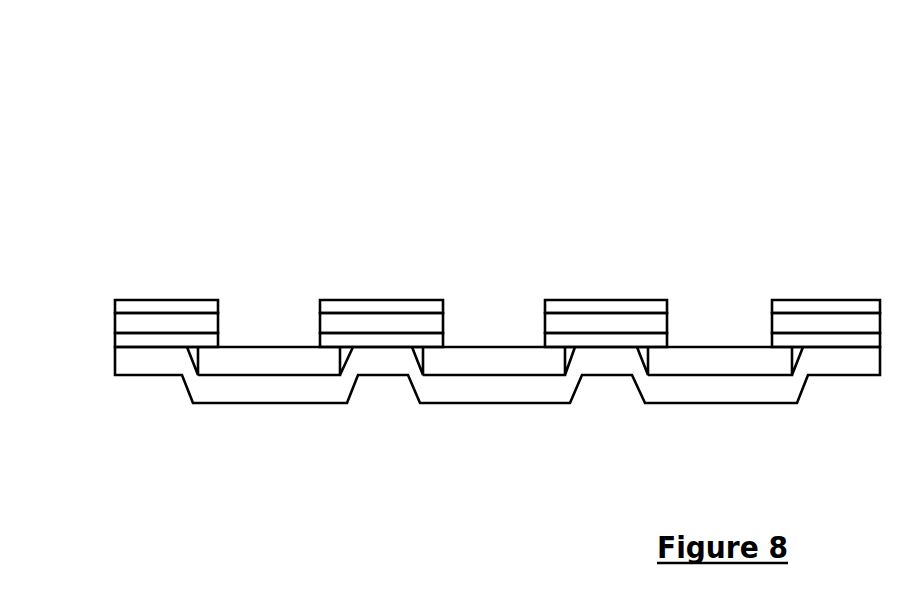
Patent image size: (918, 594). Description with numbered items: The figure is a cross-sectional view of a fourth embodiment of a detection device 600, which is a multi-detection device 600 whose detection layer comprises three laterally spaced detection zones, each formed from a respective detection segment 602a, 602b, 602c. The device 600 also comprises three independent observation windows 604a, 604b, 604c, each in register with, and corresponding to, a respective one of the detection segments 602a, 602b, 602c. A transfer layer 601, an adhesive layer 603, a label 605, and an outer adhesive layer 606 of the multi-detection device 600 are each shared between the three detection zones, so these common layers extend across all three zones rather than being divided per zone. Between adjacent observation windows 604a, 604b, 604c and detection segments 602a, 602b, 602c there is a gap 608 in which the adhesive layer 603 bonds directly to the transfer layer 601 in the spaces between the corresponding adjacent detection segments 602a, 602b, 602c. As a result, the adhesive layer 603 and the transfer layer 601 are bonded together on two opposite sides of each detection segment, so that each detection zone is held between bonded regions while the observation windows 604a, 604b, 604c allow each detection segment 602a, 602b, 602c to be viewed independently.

The detection device 600 is at (157, 110).
The transfer layer 601 is at (167, 365).
The detection segment 602a is at (283, 360).
The detection segment 602b is at (491, 362).
The detection segment 602c is at (721, 362).
The adhesive layer 603 is at (135, 340).
The observation window 604a is at (268, 276).
The observation window 604b is at (492, 274).
The observation window 604c is at (710, 277).
The label 605 is at (186, 329).
The outer adhesive layer 606 is at (199, 305).
The gap 608 is at (383, 402).